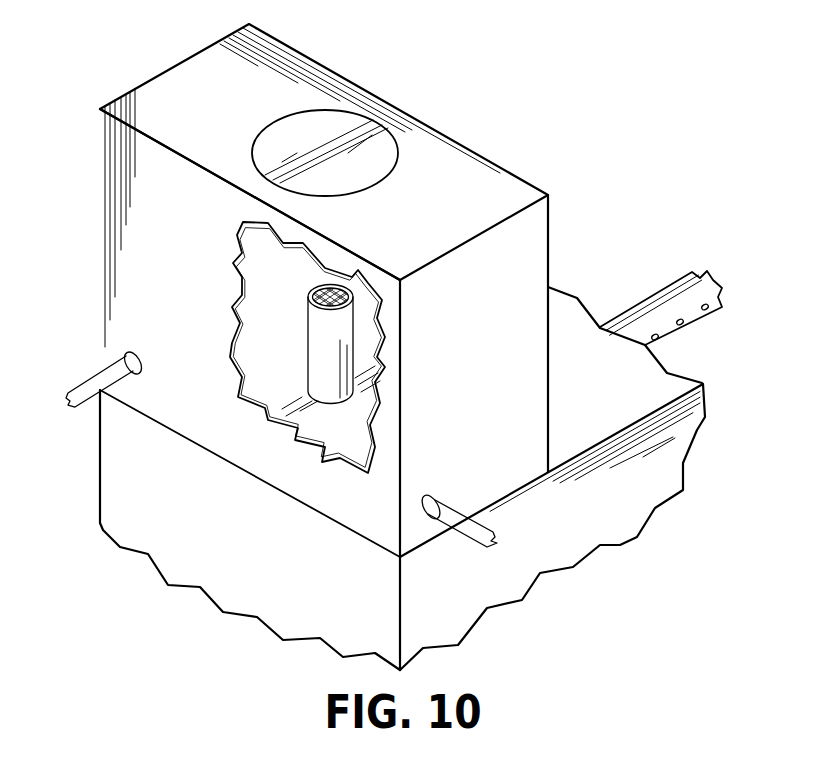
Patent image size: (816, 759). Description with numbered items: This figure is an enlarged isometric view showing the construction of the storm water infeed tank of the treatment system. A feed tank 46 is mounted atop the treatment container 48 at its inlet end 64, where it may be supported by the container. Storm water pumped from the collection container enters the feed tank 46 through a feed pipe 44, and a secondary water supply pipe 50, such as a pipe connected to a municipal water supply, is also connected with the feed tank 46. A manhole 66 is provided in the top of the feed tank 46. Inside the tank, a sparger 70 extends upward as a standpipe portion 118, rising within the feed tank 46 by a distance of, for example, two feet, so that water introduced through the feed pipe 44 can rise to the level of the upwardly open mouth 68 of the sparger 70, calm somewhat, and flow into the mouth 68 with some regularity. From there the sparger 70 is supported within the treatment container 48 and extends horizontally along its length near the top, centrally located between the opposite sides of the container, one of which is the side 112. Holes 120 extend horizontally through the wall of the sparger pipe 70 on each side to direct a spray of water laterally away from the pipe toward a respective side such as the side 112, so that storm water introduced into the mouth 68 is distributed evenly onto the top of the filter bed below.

The feed pipe 44 is at (488, 518).
The feed tank 46 is at (402, 106).
The treatment container 48 is at (578, 286).
The secondary water supply pipe 50 is at (80, 380).
The inlet end 64 is at (243, 586).
The manhole 66 is at (274, 125).
The mouth 68 is at (332, 291).
The sparger 70 is at (641, 301).
The side 112 is at (600, 515).
The standpipe portion 118 is at (318, 359).
The holes 120 is at (684, 325).